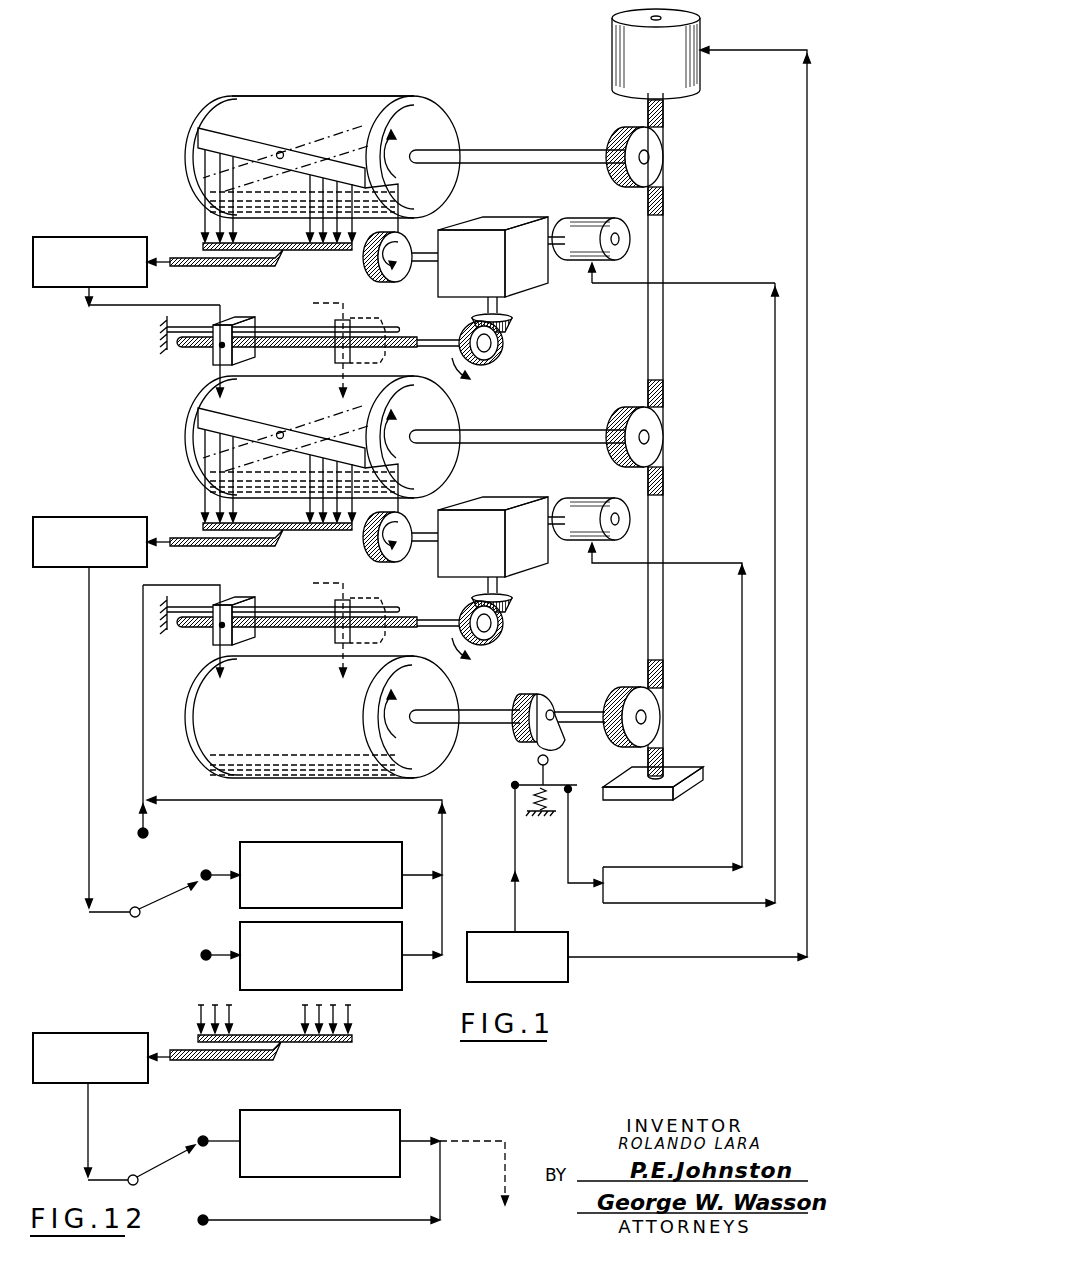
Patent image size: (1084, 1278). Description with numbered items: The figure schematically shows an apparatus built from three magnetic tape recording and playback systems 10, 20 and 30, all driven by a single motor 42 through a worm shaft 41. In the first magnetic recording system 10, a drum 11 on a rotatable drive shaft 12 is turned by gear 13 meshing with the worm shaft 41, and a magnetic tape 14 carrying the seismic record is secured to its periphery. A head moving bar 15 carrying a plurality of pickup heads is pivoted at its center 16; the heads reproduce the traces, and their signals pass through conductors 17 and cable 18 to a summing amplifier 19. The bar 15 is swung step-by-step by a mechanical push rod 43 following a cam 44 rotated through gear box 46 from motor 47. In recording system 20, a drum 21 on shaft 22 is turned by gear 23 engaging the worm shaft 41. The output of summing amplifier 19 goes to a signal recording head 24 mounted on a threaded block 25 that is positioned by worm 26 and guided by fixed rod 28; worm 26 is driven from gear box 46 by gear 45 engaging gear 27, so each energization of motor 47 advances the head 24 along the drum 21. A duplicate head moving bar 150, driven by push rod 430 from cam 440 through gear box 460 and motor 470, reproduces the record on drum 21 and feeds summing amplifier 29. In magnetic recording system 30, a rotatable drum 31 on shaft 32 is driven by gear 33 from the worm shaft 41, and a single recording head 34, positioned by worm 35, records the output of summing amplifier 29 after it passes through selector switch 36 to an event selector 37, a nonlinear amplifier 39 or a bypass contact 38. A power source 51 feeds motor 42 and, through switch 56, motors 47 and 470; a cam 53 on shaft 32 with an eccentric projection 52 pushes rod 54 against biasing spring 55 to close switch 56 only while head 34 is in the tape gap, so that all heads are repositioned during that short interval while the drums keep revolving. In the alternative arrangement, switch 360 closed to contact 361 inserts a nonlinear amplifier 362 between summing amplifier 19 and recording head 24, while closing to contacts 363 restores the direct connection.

In FIG. 1, the first magnetic recording system 10 is at (192, 106).
In FIG. 1, the drum 11 is at (385, 108).
In FIG. 1, the rotatable drive shaft 12 is at (512, 147).
In FIG. 1, the gear 13 is at (612, 142).
In FIG. 1, the magnetic tape 14 is at (238, 105).
In FIG. 1, the head moving bar 15 is at (200, 137).
In FIG. 1, the pivot 16 is at (282, 150).
In FIG. 1, the conductors 17 is at (218, 226).
In FIG. 1, the cable 18 is at (188, 257).
In FIG. 12, the cable 18 is at (285, 1052).
In FIG. 1, the summing amplifier 19 is at (90, 235).
In FIG. 12, the summing amplifier 19 is at (90, 1032).
In FIG. 1, the recording system 20 is at (264, 461).
In FIG. 1, the drum 21 is at (413, 423).
In FIG. 1, the shaft 22 is at (518, 421).
In FIG. 1, the gear 23 is at (615, 423).
In FIG. 1, the signal recording head 24 is at (222, 397).
In FIG. 12, the signal recording head 24 is at (495, 1197).
In FIG. 1, the threaded block 25 is at (230, 322).
In FIG. 1, the worm 26 is at (195, 347).
In FIG. 1, the gear 27 is at (492, 362).
In FIG. 1, the fixed rod 28 is at (278, 337).
In FIG. 1, the summing amplifier 29 is at (90, 522).
In FIG. 1, the magnetic recording system 30 is at (284, 710).
In FIG. 1, the rotatable drum 31 is at (382, 717).
In FIG. 1, the shaft 32 is at (508, 699).
In FIG. 1, the gear 33 is at (624, 701).
In FIG. 1, the recording head 34 is at (201, 654).
In FIG. 1, the worm 35 is at (313, 598).
In FIG. 1, the selector switch 36 is at (170, 892).
In FIG. 1, the event selector 37 is at (238, 850).
In FIG. 1, the bypass contact 38 is at (139, 830).
In FIG. 1, the nonlinear amplifier 39 is at (238, 935).
In FIG. 1, the worm shaft 41 is at (665, 350).
In FIG. 1, the motor 42 is at (610, 52).
In FIG. 1, the mechanical push rod 43 is at (398, 202).
In FIG. 1, the cam 44 is at (402, 283).
In FIG. 1, the gear 45 is at (510, 328).
In FIG. 1, the gear box 46 is at (540, 285).
In FIG. 1, the motor 47 is at (590, 218).
In FIG. 1, the power source 51 is at (540, 930).
In FIG. 1, the eccentric projection 52 is at (548, 694).
In FIG. 1, the cam 53 is at (562, 746).
In FIG. 1, the rod 54 is at (540, 776).
In FIG. 1, the biasing spring 55 is at (538, 790).
In FIG. 1, the switch 56 is at (572, 792).
In FIG. 1, the head moving bar 150 is at (241, 437).
In FIG. 12, the switch 360 is at (165, 1162).
In FIG. 12, the contact 361 is at (203, 1135).
In FIG. 12, the nonlinear amplifier 362 is at (370, 1110).
In FIG. 12, the contacts 363 is at (203, 1213).
In FIG. 1, the mechanical push rod 430 is at (436, 488).
In FIG. 1, the cam 440 is at (400, 557).
In FIG. 1, the gear box 460 is at (510, 552).
In FIG. 1, the motor 470 is at (591, 502).